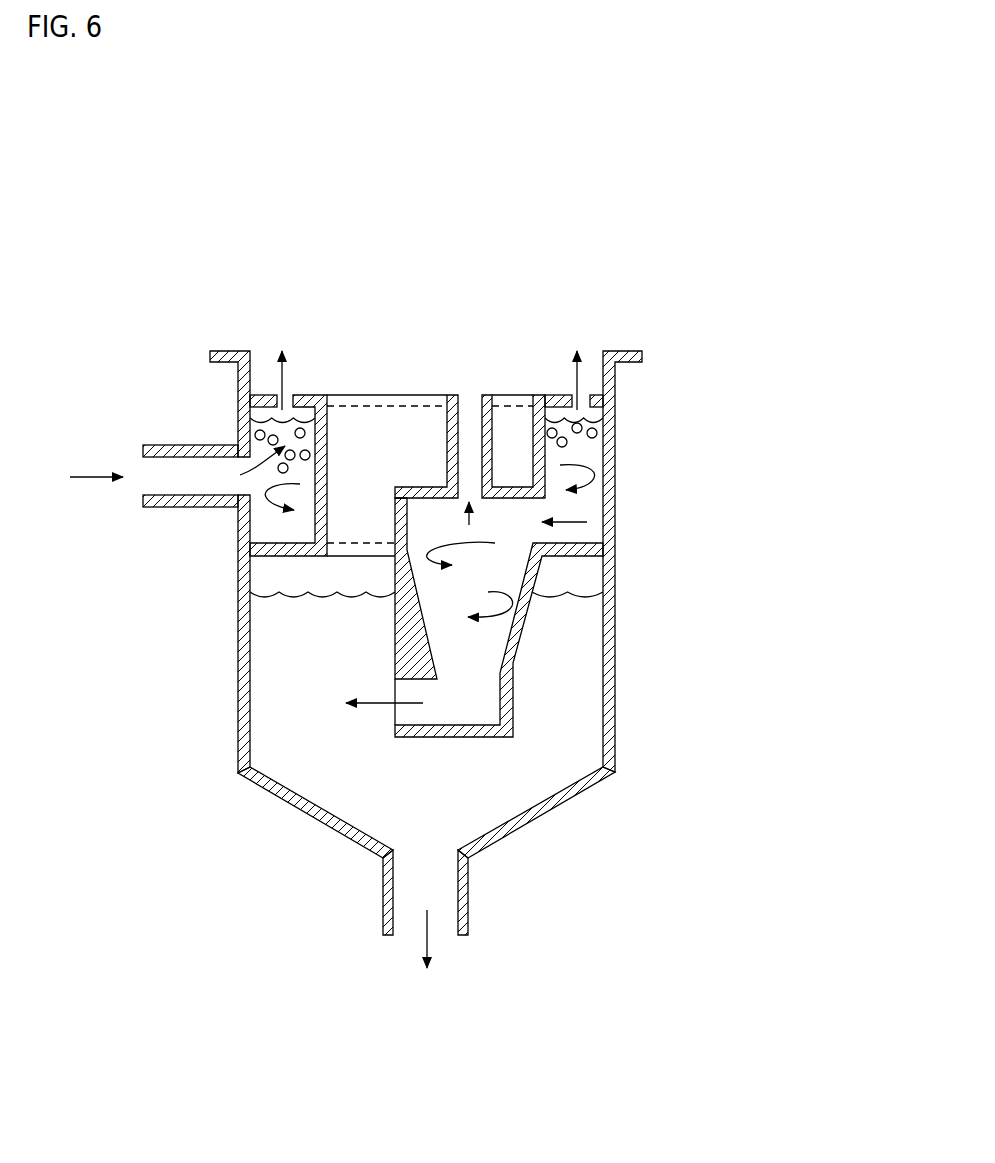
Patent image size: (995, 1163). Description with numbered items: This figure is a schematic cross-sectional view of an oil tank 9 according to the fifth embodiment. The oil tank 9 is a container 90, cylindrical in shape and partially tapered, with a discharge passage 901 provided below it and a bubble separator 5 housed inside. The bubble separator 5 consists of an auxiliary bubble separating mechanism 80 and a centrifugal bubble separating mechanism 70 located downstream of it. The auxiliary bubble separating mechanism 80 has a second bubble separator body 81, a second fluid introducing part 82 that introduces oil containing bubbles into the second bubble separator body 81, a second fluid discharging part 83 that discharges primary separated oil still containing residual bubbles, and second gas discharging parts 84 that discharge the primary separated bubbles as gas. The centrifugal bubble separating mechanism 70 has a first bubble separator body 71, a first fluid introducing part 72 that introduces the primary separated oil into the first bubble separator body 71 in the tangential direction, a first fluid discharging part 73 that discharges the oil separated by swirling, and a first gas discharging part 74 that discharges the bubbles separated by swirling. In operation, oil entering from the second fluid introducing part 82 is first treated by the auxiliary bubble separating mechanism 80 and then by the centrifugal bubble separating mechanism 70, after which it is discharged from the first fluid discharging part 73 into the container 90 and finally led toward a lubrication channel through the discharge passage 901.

The bubble separator 5 is at (695, 212).
The oil tank 9 is at (356, 659).
The centrifugal bubble separating mechanism 70 is at (576, 525).
The first bubble separator body 71 is at (537, 570).
The first fluid introducing part 72 is at (545, 512).
The first fluid discharging part 73 is at (427, 702).
The first gas discharging part 74 is at (472, 405).
The auxiliary bubble separating mechanism 80 is at (398, 427).
The second bubble separator body 81 is at (242, 527).
The second fluid introducing part 82 is at (175, 473).
The second fluid discharging part 83 is at (683, 460).
The second gas discharging parts 84 is at (272, 403).
The container 90 is at (542, 820).
The discharge passage 901 is at (468, 897).